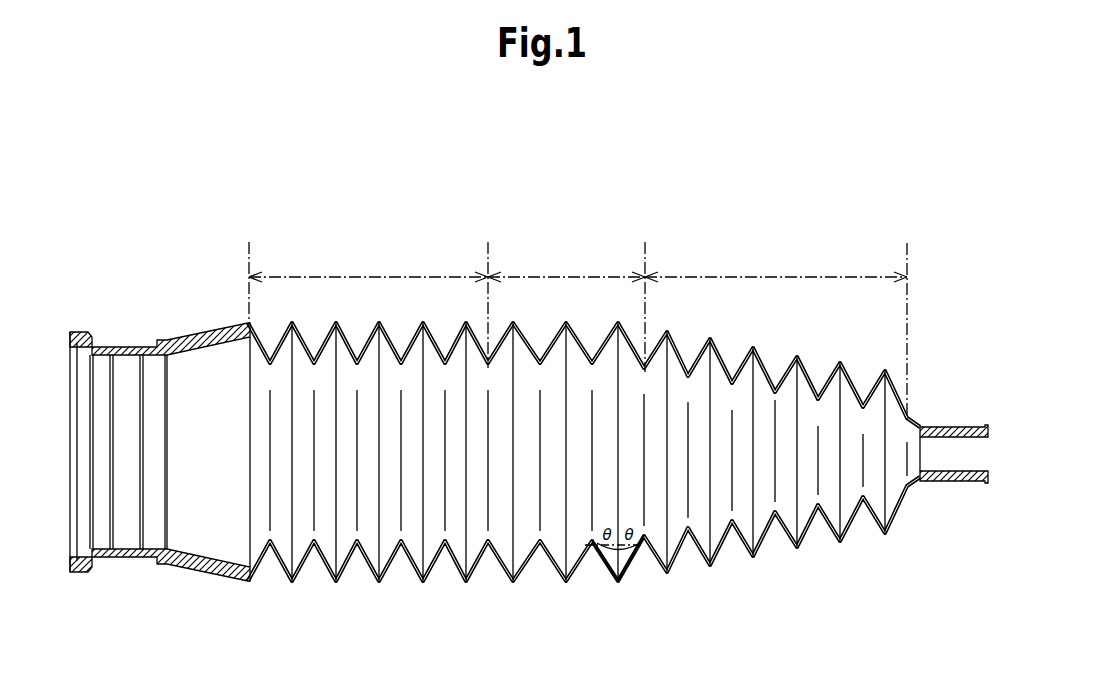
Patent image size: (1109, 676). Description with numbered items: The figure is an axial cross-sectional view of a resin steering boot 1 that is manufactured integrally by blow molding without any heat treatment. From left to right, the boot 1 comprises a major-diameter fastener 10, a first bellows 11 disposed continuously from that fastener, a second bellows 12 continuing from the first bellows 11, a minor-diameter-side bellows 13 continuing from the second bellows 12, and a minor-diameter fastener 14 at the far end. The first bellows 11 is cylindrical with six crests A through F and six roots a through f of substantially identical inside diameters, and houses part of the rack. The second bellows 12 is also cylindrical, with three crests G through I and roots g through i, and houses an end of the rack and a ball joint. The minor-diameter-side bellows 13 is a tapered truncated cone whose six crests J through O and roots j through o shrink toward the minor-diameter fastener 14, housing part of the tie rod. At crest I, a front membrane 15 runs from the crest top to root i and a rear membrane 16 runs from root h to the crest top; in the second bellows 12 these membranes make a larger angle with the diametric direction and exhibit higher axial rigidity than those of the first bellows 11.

The boot 1 is at (730, 572).
The major-diameter fastener 10 is at (122, 347).
The first bellows 11 is at (376, 277).
The second bellows 12 is at (572, 277).
The minor-diameter-side bellows 13 is at (778, 277).
The minor-diameter fastener 14 is at (953, 428).
The front membrane 15 is at (633, 565).
The rear membrane 16 is at (603, 570).